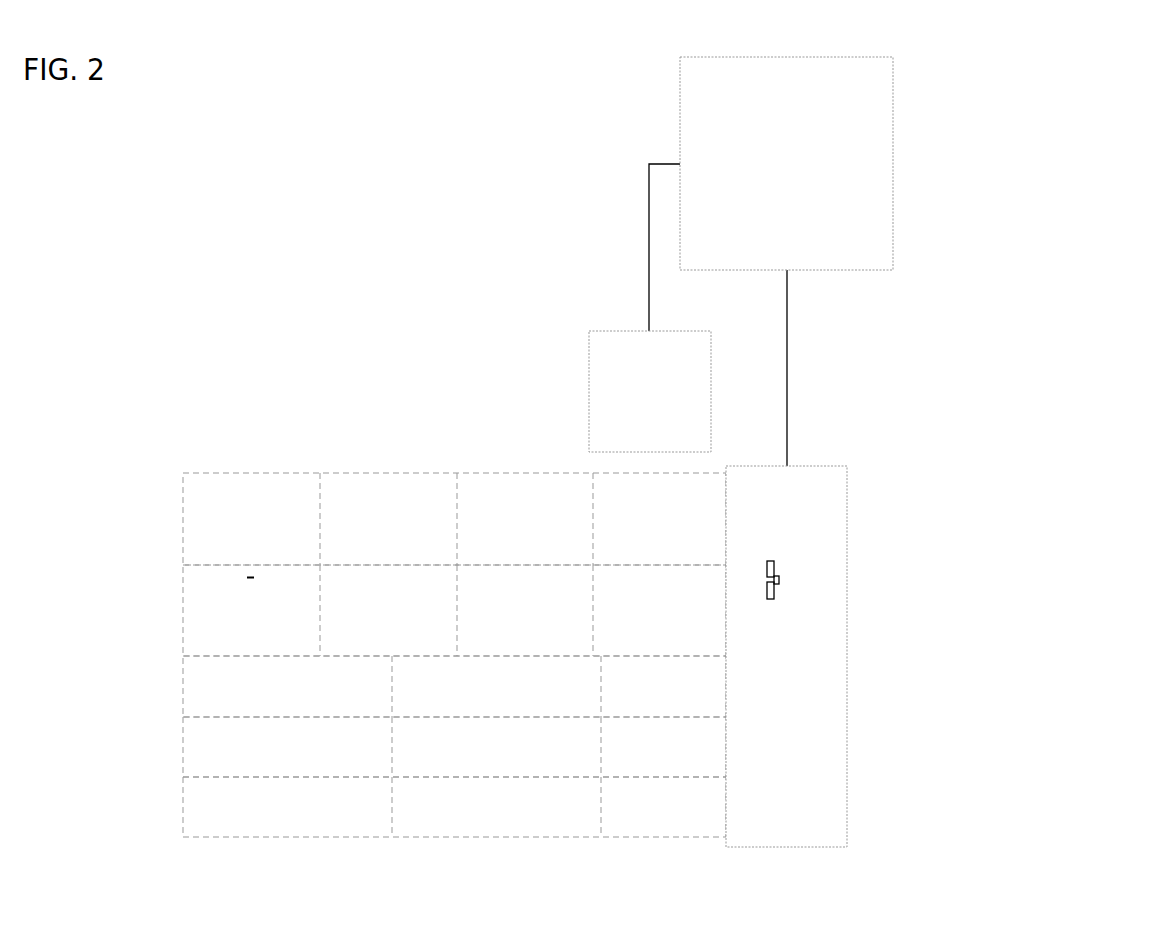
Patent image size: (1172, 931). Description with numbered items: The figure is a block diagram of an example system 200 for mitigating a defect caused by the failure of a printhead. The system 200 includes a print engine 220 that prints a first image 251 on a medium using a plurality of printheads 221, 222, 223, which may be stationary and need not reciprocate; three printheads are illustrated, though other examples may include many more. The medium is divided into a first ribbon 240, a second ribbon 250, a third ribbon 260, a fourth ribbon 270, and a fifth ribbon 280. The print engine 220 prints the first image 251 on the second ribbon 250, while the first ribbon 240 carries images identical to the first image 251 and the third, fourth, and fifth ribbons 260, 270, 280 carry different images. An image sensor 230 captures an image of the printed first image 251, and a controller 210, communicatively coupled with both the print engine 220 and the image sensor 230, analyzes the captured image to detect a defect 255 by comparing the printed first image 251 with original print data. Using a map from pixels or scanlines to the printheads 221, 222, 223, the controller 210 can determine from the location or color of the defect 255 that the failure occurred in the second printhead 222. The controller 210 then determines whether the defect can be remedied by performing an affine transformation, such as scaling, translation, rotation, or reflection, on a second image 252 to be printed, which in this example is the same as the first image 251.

The system 200 is at (1031, 60).
The controller 210 is at (767, 189).
The print engine 220 is at (807, 695).
The printhead 221 is at (775, 566).
The second printhead 222 is at (779, 580).
The printhead 223 is at (775, 594).
The image sensor 230 is at (630, 429).
The first ribbon 240 is at (183, 518).
The second ribbon 250 is at (394, 550).
The first image 251 is at (268, 590).
The second image 252 is at (412, 587).
The defect 255 is at (245, 577).
The third ribbon 260 is at (183, 690).
The fourth ribbon 270 is at (183, 748).
The fifth ribbon 280 is at (183, 812).